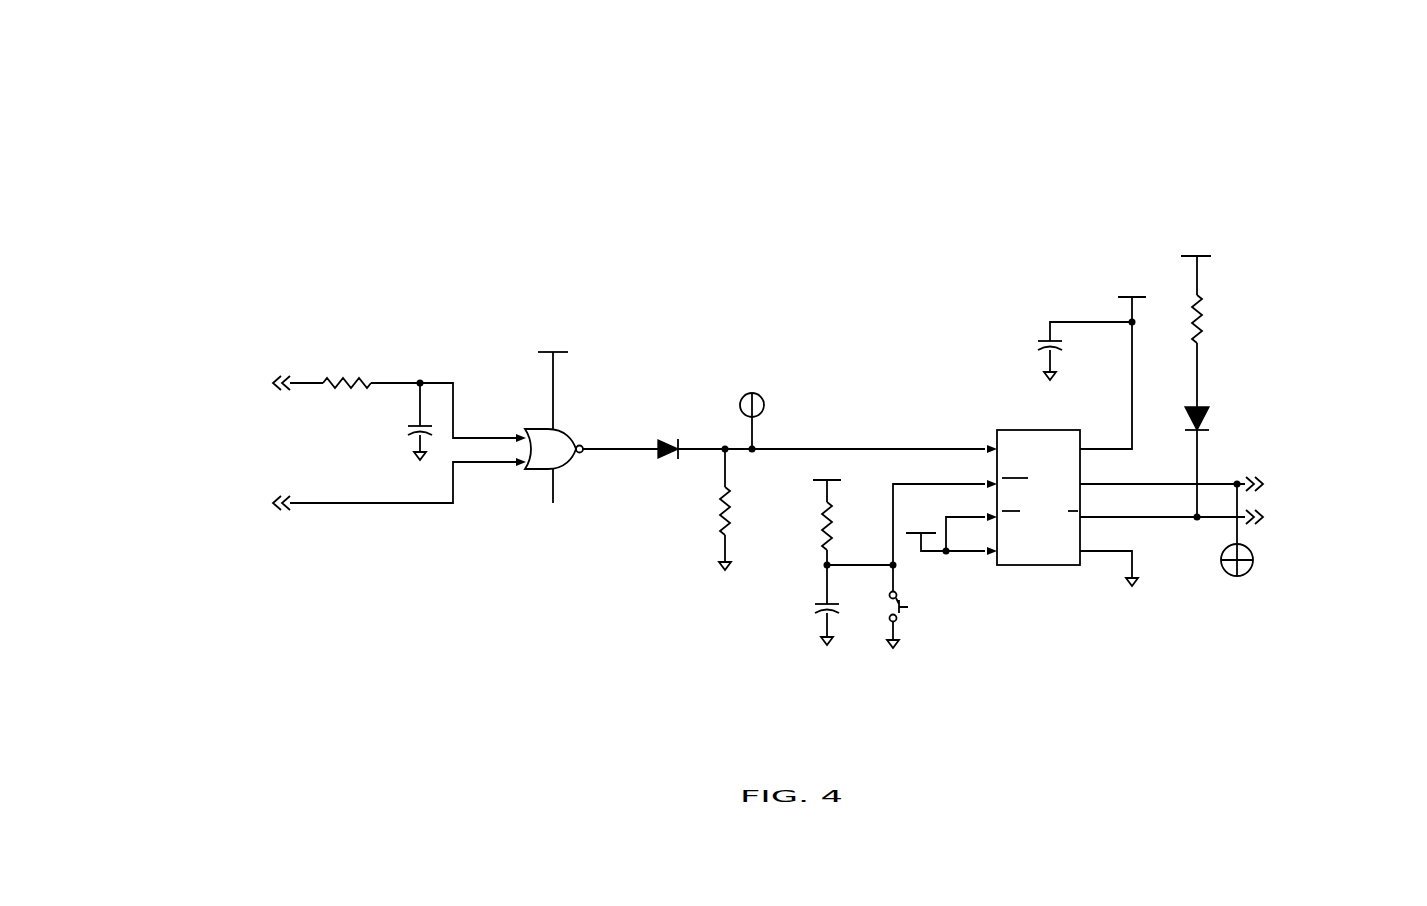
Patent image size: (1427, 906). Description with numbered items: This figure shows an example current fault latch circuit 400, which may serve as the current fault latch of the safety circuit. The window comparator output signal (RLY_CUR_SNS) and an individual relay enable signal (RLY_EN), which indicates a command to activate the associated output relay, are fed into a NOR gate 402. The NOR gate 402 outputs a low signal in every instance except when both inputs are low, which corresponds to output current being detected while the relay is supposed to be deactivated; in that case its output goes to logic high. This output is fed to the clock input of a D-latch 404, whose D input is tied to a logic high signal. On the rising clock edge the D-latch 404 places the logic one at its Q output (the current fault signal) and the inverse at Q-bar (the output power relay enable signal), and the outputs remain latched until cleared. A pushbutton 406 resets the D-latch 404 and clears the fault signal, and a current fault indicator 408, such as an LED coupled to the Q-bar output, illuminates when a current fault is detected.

The current fault latch circuit 400 is at (588, 655).
The NOR gate 402 is at (565, 471).
The D-latch 404 is at (997, 432).
The pushbutton 406 is at (928, 647).
The current fault indicator 408 is at (1215, 393).